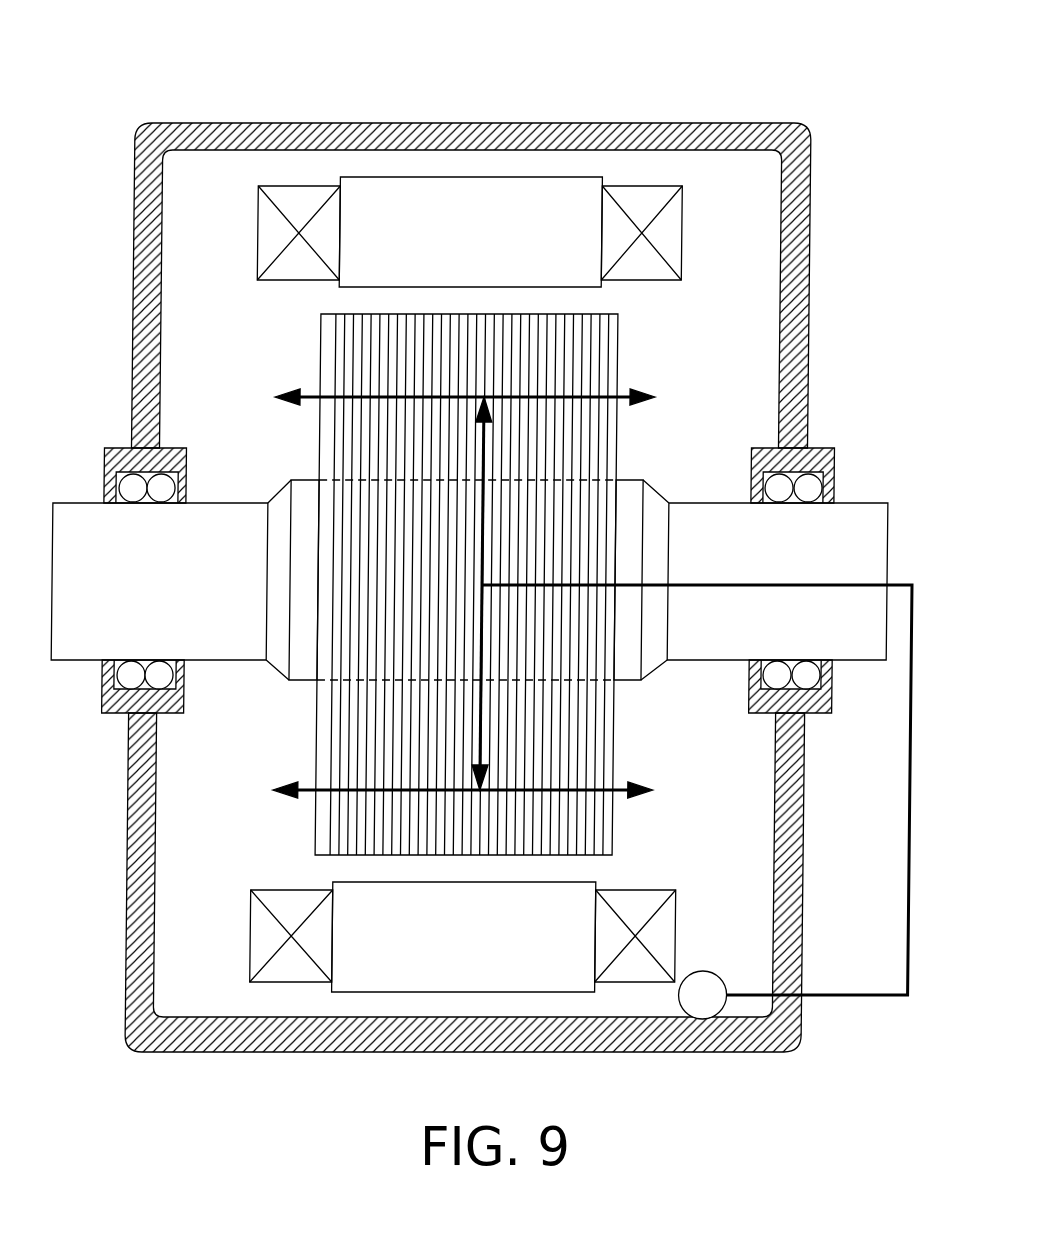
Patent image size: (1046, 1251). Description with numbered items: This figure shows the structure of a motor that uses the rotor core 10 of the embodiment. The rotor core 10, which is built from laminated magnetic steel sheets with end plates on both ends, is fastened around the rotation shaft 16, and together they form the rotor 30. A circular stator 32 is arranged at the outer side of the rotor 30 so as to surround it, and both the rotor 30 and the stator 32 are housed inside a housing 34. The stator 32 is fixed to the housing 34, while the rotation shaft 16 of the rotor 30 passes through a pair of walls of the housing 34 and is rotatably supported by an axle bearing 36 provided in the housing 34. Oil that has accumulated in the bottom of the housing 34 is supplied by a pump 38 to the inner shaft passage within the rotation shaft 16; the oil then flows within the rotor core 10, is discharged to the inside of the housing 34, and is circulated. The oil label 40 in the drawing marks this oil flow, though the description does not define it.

The rotor core 10 is at (632, 368).
The rotation shaft 16 is at (275, 632).
The rotor 30 is at (288, 463).
The stator 32 is at (483, 235).
The housing 34 is at (807, 288).
The axle bearing 36 is at (822, 490).
The pump 38 is at (701, 1019).
The oil 40 is at (492, 581).